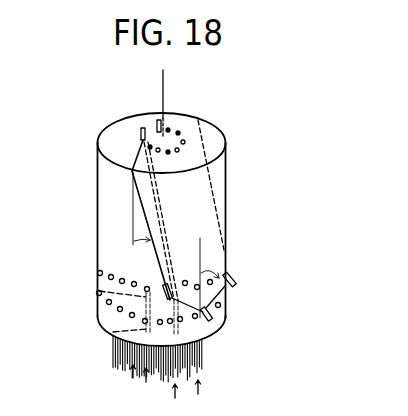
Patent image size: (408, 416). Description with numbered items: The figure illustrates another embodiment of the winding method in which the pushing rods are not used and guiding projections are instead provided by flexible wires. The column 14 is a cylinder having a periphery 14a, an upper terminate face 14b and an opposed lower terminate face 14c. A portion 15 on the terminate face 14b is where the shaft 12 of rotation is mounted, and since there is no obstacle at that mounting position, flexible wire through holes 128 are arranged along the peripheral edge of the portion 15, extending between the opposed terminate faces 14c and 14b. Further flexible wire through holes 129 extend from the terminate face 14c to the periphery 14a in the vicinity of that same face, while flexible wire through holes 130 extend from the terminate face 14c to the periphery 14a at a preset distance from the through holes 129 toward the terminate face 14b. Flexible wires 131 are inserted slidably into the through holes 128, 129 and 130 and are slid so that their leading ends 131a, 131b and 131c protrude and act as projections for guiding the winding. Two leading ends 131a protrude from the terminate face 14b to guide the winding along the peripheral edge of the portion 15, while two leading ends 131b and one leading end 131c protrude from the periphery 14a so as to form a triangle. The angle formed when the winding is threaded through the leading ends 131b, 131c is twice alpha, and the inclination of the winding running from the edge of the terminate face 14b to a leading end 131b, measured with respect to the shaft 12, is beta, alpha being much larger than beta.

The shaft 12 is at (167, 84).
The column 14 is at (228, 228).
The periphery 14a is at (219, 182).
The terminate face 14b is at (216, 136).
The terminate face 14c is at (226, 346).
The portion 15 is at (161, 128).
The flexible wire through holes 128 is at (168, 247).
The flexible wire through holes 129 is at (97, 283).
The flexible wire through holes 130 is at (116, 332).
The flexible wires 131 is at (118, 344).
The leading ends 131a is at (141, 128).
The leading ends 131b is at (235, 277).
The leading end 131c is at (213, 317).